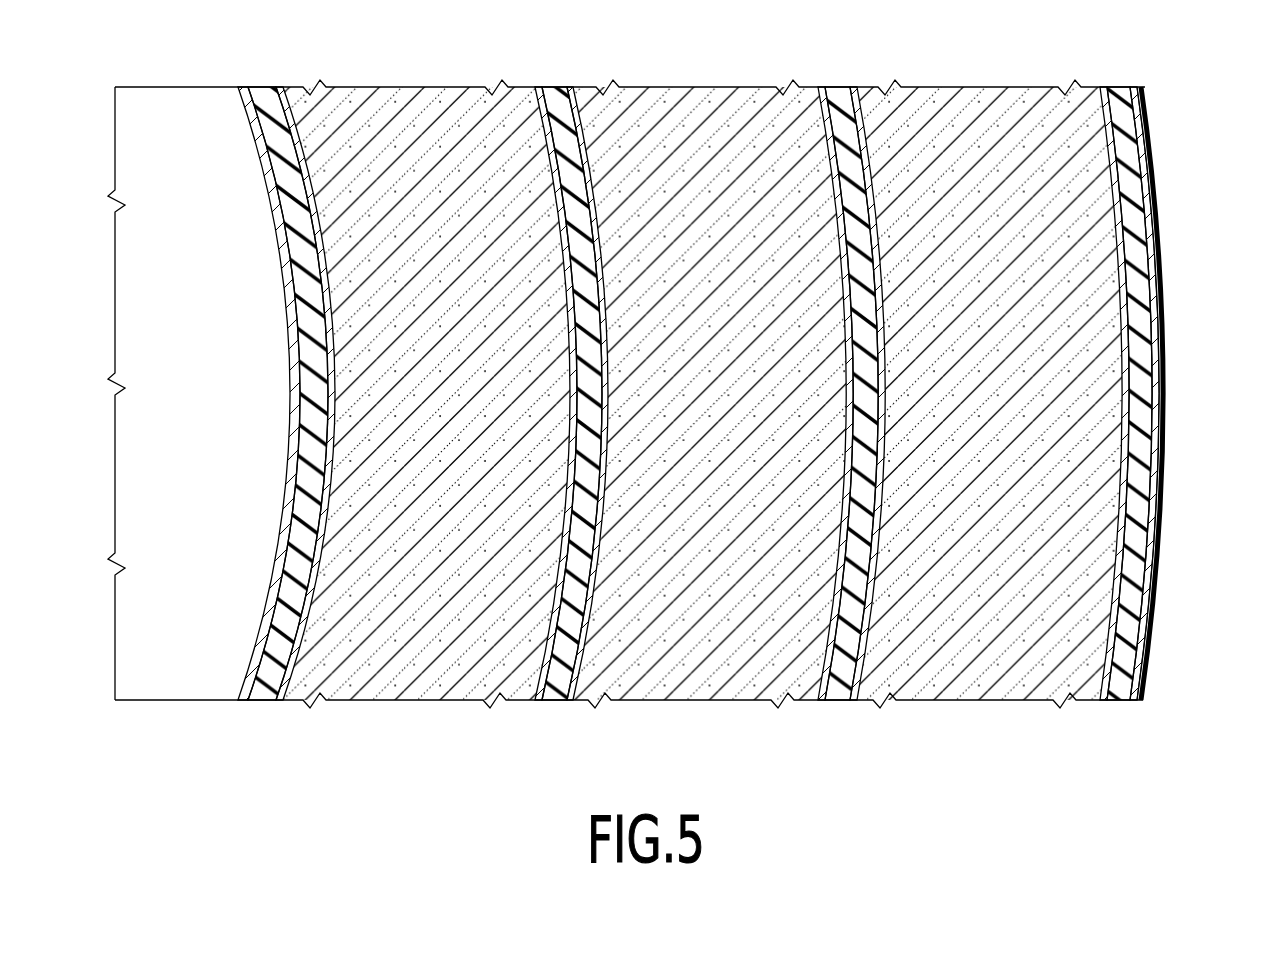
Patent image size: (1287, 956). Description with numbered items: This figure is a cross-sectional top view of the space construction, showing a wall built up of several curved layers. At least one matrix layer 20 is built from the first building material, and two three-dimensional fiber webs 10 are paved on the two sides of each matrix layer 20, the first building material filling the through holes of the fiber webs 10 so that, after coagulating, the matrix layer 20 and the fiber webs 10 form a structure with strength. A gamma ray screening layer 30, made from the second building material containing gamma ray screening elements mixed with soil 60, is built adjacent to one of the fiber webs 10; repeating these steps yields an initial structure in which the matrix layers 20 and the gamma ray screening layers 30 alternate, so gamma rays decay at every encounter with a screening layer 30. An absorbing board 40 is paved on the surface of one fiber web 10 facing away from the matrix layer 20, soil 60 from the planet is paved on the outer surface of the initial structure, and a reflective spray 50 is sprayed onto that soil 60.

The three-dimensional fiber web 10 is at (710, 382).
The matrix layer 20 is at (423, 683).
The gamma ray screening layer 30 is at (263, 682).
The absorbing board 40 is at (267, 177).
The reflective spray 50 is at (1165, 283).
The soil 60 is at (1135, 87).